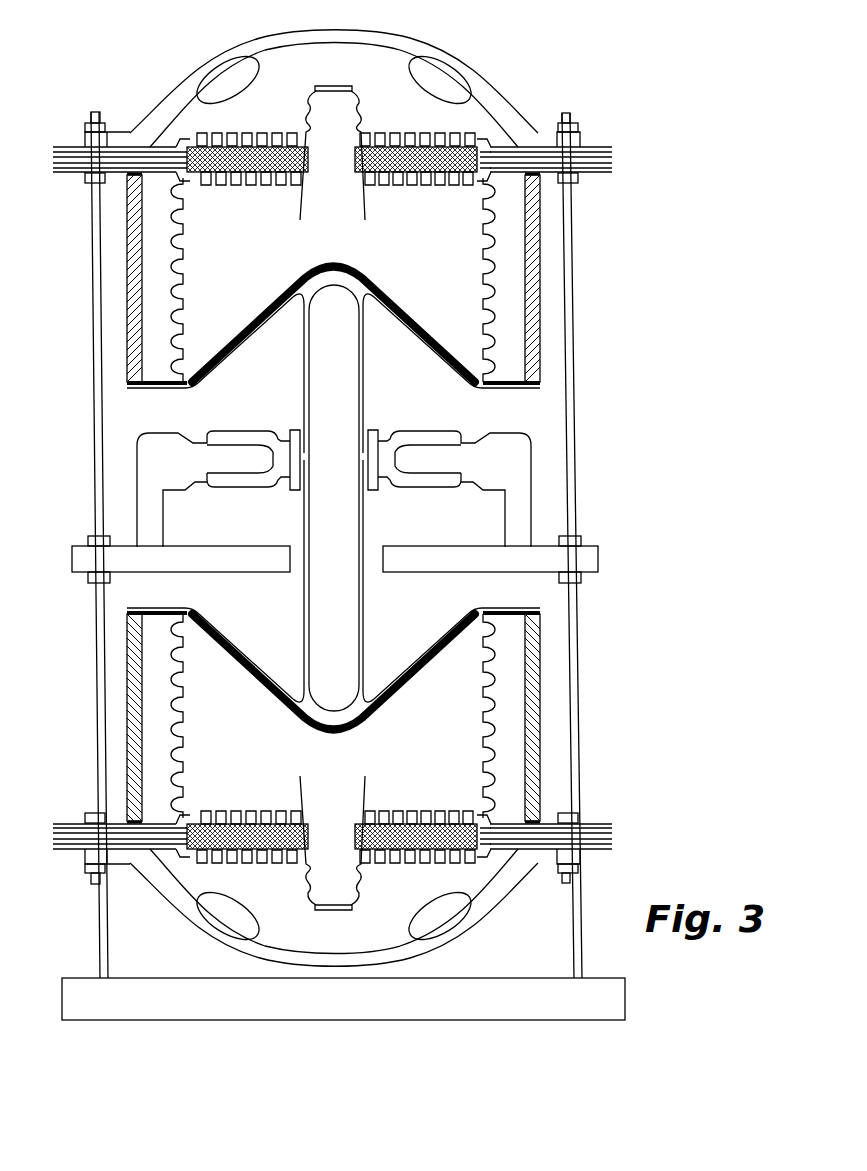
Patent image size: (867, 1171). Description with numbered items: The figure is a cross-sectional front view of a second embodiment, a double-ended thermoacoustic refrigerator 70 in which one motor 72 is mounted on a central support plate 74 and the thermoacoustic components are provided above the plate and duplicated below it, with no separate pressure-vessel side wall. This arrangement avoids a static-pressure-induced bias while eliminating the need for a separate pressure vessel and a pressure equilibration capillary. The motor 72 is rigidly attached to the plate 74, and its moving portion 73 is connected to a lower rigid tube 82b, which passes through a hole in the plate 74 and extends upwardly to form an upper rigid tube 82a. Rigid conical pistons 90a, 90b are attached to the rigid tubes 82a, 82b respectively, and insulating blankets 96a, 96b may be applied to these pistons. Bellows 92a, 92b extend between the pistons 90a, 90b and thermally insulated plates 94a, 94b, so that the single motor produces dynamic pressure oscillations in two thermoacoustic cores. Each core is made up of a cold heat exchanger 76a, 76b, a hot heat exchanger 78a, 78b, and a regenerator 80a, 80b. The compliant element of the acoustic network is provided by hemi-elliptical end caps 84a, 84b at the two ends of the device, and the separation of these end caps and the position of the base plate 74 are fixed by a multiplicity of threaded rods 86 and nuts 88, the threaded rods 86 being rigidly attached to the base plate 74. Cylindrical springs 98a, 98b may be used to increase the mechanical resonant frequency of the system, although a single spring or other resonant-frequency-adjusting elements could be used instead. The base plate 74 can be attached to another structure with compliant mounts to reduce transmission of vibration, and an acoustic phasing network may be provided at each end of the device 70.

The double-ended thermoacoustic refrigerator 70 is at (665, 130).
The motor 72 is at (506, 505).
The moving portion of the motor 73 is at (389, 430).
The central support plate 74 is at (220, 565).
The cold heat exchanger 76a is at (263, 190).
The cold heat exchanger 76b is at (273, 817).
The hot heat exchanger 78a is at (388, 134).
The hot heat exchanger 78b is at (397, 866).
The regenerator 80a is at (394, 178).
The regenerator 80b is at (418, 813).
The rigid tube 82a is at (304, 372).
The rigid tube 82b is at (306, 523).
The hemi-elliptical end cap 84a is at (279, 56).
The hemi-elliptical end cap 84b is at (273, 943).
The threaded rod 86 is at (93, 290).
The nut 88 is at (578, 118).
The rigid conical piston 90a is at (433, 351).
The rigid conical piston 90b is at (426, 650).
The bellows 92a is at (181, 243).
The bellows 92b is at (182, 673).
The thermally insulated plate 94a is at (512, 155).
The thermally insulated plate 94b is at (510, 838).
The insulating blanket 96a is at (384, 294).
The insulating blanket 96b is at (405, 688).
The cylindrical spring 98a is at (538, 232).
The cylindrical spring 98b is at (543, 731).